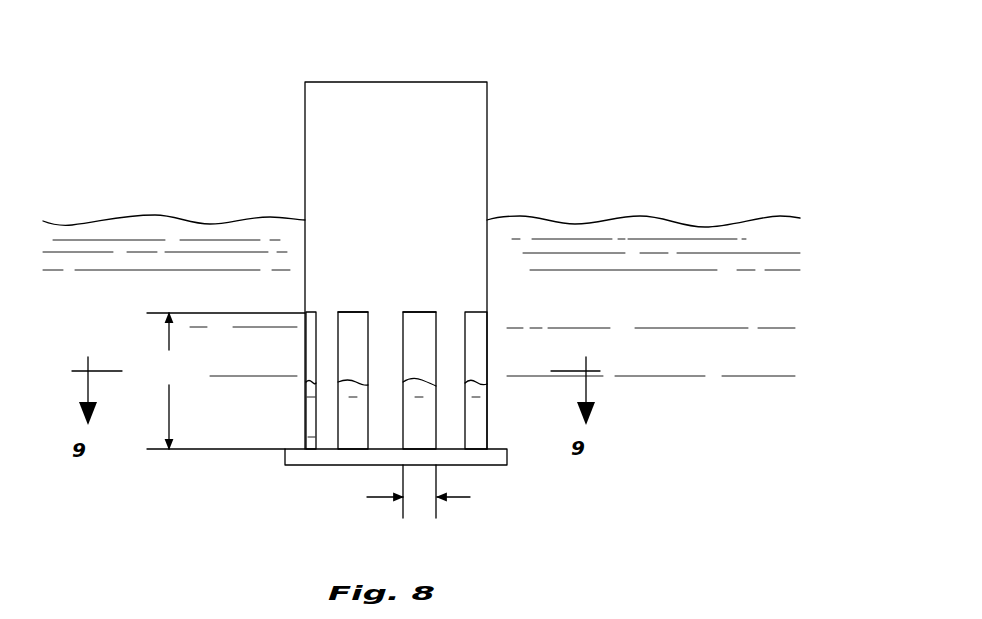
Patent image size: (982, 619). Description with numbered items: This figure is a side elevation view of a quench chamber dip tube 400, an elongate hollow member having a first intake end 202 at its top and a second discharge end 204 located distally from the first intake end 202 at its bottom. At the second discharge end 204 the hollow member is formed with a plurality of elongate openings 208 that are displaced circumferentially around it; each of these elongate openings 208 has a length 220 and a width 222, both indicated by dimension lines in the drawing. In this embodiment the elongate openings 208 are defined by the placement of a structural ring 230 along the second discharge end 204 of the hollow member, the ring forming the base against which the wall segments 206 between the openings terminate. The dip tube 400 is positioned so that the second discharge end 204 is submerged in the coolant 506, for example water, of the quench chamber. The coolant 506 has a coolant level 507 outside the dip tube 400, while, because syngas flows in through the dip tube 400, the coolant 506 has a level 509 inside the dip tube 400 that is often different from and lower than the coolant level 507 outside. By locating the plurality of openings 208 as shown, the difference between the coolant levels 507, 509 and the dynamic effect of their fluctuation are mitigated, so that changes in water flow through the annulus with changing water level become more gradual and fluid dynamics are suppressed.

The first intake end 202 is at (492, 97).
The second discharge end 204 is at (278, 439).
The tubes 206 is at (385, 440).
The elongate openings 208 is at (428, 322).
The length 220 is at (226, 381).
The width 222 is at (441, 491).
The structural ring 230 is at (507, 455).
The quench chamber dip tube 400 is at (590, 100).
The coolant 506 is at (682, 319).
The coolant level 507 is at (660, 218).
The level 509 is at (358, 382).